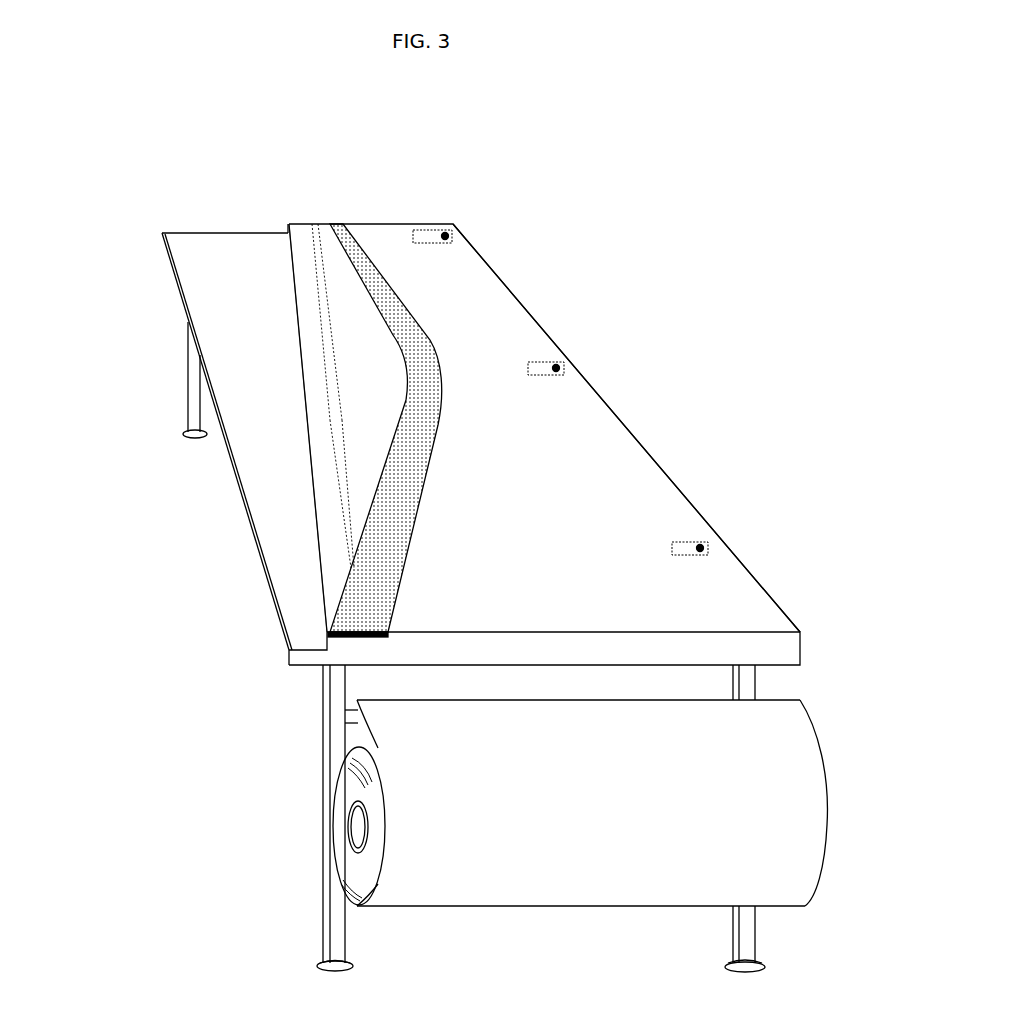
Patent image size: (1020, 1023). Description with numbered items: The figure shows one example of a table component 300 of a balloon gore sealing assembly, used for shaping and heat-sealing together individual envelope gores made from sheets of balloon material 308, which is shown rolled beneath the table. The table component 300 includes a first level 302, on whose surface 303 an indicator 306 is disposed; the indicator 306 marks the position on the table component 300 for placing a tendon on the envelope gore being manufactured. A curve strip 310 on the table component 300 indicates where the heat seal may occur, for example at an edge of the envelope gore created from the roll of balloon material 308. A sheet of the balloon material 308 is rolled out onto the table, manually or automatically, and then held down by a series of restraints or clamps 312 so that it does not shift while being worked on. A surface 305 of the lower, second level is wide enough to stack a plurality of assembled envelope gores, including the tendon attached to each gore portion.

The table component 300 is at (782, 52).
The first level 302 is at (400, 225).
The surface 303 is at (230, 232).
The surface 305 is at (263, 372).
The indicator 306 is at (330, 445).
The balloon material 308 is at (490, 792).
The curve strip 310 is at (408, 512).
The clamps 312 is at (556, 368).